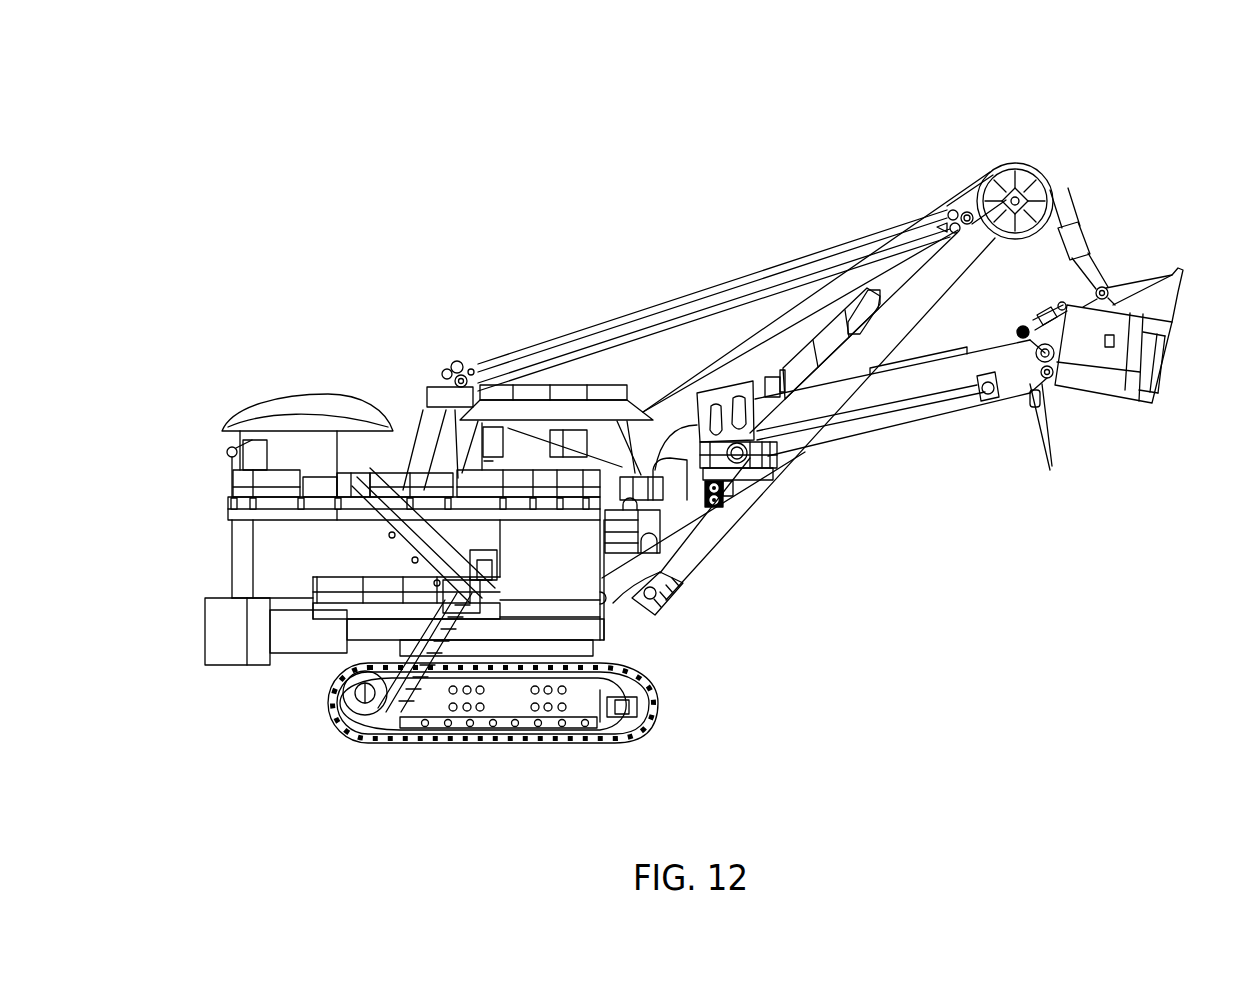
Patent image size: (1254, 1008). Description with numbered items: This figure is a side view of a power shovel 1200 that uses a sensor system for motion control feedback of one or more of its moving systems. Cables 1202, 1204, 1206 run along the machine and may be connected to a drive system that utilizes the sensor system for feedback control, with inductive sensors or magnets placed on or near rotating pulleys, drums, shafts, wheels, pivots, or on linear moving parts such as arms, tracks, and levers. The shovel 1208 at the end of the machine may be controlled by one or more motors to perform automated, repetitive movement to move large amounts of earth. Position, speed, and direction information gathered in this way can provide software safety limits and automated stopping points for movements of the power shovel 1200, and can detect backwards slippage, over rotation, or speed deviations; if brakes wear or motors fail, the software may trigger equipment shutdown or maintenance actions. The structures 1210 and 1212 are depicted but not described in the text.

The power shovel 1200 is at (236, 115).
The cable 1202 is at (733, 281).
The cable 1204 is at (883, 427).
The cable 1206 is at (748, 331).
The shovel 1208 is at (1093, 400).
The boom 1210 is at (910, 311).
The crawler track 1212 is at (658, 708).